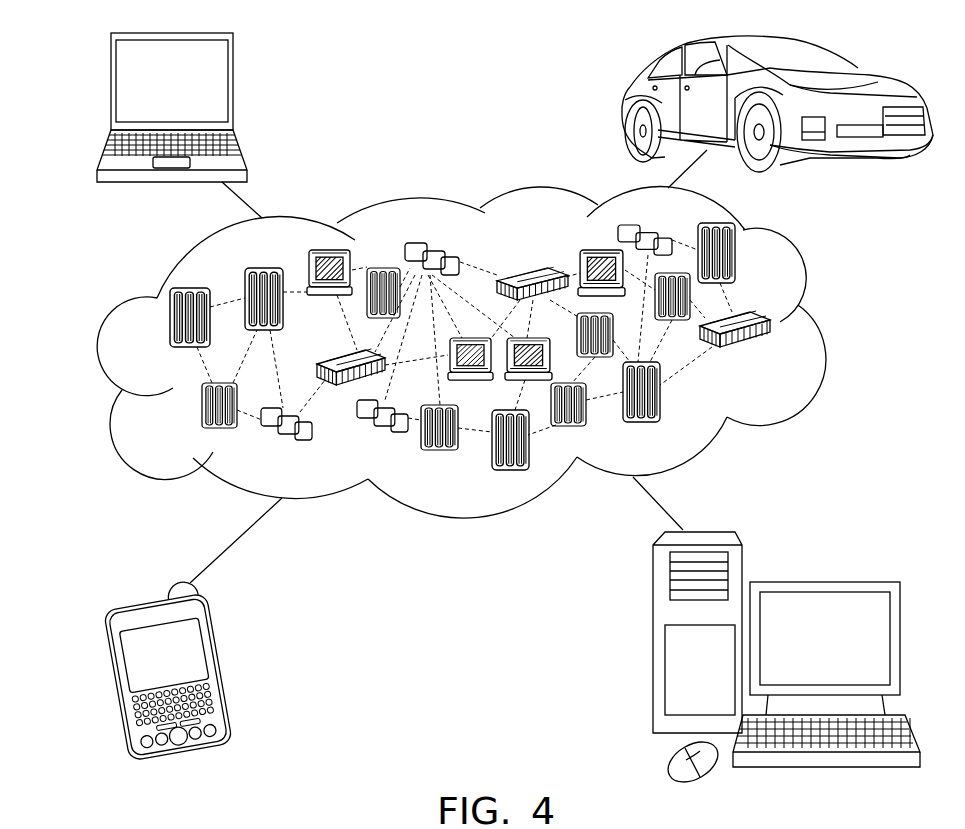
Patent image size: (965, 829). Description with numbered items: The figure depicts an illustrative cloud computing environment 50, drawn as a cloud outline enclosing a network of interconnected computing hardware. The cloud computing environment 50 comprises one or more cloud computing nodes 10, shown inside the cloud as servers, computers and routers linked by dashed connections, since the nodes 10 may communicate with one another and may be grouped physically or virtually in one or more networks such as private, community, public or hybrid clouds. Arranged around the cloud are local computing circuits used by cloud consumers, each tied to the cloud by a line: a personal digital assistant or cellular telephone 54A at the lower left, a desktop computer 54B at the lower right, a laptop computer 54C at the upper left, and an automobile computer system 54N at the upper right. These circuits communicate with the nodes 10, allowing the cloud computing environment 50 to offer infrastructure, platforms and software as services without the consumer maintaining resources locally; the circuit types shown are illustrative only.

The cloud computing node 10 is at (771, 355).
The cloud computing environment 50 is at (825, 332).
The personal digital assistant (PDA) or cellular telephone 54A is at (222, 667).
The desktop computer 54B is at (823, 581).
The laptop computer 54C is at (233, 88).
The automobile computer system 54N is at (625, 105).